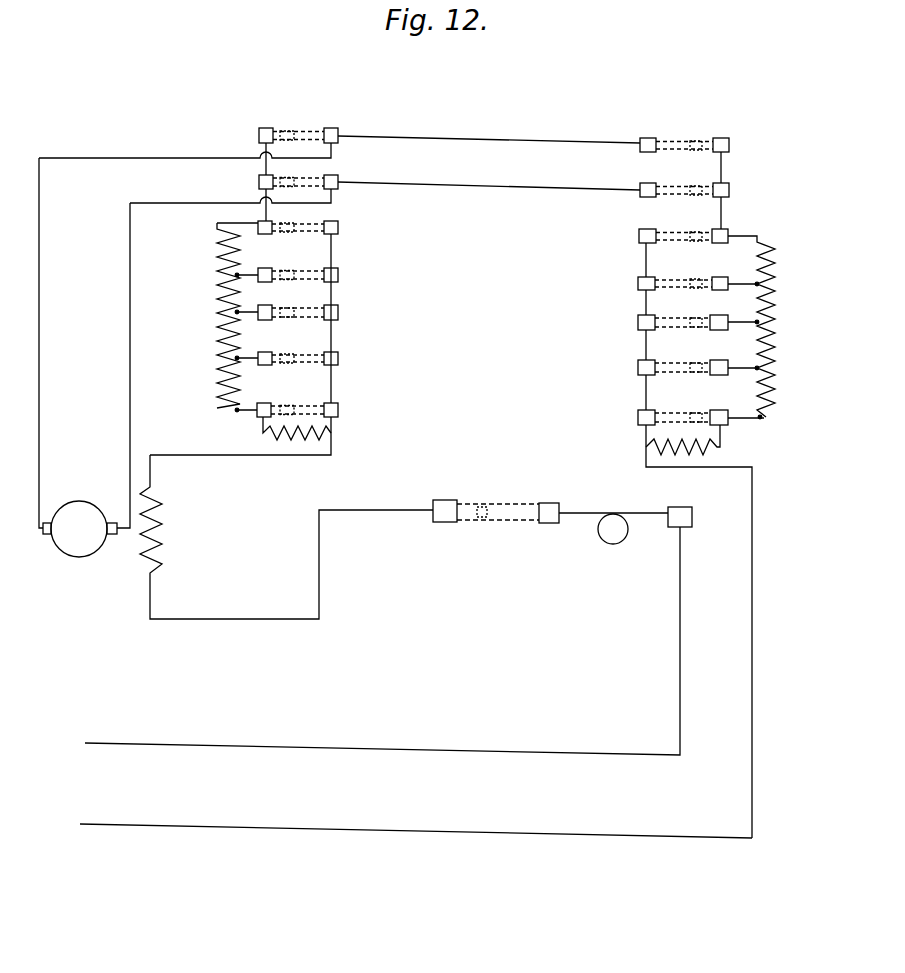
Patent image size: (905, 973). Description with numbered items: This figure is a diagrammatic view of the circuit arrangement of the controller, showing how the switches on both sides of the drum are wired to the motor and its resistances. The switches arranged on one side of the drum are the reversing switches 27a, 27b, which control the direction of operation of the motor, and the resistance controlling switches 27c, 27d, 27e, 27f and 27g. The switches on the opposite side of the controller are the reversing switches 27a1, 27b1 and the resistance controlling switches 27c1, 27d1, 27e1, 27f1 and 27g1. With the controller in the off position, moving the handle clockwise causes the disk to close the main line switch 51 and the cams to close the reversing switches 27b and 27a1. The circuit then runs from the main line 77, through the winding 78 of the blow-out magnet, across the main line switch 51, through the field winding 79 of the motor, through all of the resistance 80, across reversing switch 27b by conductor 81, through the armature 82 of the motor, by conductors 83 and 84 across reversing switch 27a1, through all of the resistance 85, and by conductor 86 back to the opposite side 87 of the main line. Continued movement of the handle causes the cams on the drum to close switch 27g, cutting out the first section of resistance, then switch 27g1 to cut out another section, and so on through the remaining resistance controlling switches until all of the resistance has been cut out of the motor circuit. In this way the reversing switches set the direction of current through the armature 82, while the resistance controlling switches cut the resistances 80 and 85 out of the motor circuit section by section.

The reversing switch 27a is at (313, 124).
The reversing switch 27b is at (317, 174).
The resistance controlling switch 27c is at (318, 219).
The resistance controlling switch 27d is at (318, 269).
The resistance controlling switch 27e is at (315, 306).
The resistance controlling switch 27f is at (315, 353).
The resistance controlling switch 27g is at (312, 411).
The reversing switch 27a1 is at (690, 122).
The reversing switch 27b1 is at (685, 173).
The resistance controlling switch 27c1 is at (683, 218).
The resistance controlling switch 27d1 is at (683, 264).
The resistance controlling switch 27e1 is at (683, 307).
The resistance controlling switch 27f1 is at (683, 352).
The resistance controlling switch 27g1 is at (683, 415).
The main line switch 51 is at (517, 493).
The main line 77 is at (333, 748).
The winding of the blow-out magnet 78 is at (613, 544).
The field winding 79 is at (163, 548).
The resistance 80 is at (219, 379).
The conductor 81 is at (131, 348).
The armature 82 is at (85, 488).
The conductor 83 is at (39, 346).
The conductor 84 is at (503, 141).
The resistance 85 is at (717, 450).
The conductor 86 is at (755, 684).
The opposite side of the main line 87 is at (392, 834).